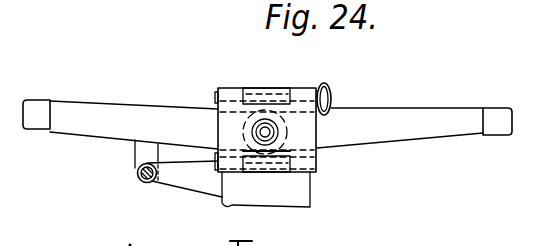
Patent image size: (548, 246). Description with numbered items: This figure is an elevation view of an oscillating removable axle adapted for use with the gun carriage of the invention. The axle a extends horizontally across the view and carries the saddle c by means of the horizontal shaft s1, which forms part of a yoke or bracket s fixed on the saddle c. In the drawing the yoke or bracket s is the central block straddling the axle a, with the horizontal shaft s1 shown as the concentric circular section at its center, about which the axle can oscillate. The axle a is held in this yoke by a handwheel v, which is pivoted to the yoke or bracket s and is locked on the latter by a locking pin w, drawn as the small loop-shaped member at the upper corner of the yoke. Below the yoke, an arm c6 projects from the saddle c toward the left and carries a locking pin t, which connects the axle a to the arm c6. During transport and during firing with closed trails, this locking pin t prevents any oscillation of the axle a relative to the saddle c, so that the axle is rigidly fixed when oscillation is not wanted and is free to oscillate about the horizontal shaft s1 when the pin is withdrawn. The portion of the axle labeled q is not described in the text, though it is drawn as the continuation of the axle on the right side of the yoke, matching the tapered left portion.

The axle a is at (145, 112).
The right bar q is at (413, 118).
The handwheel v is at (308, 137).
The yoke or bracket s is at (253, 95).
The horizontal shaft s1 is at (265, 132).
The locking pin w is at (329, 88).
The saddle c is at (302, 195).
The arm c6 is at (203, 186).
The locking pin t is at (137, 175).